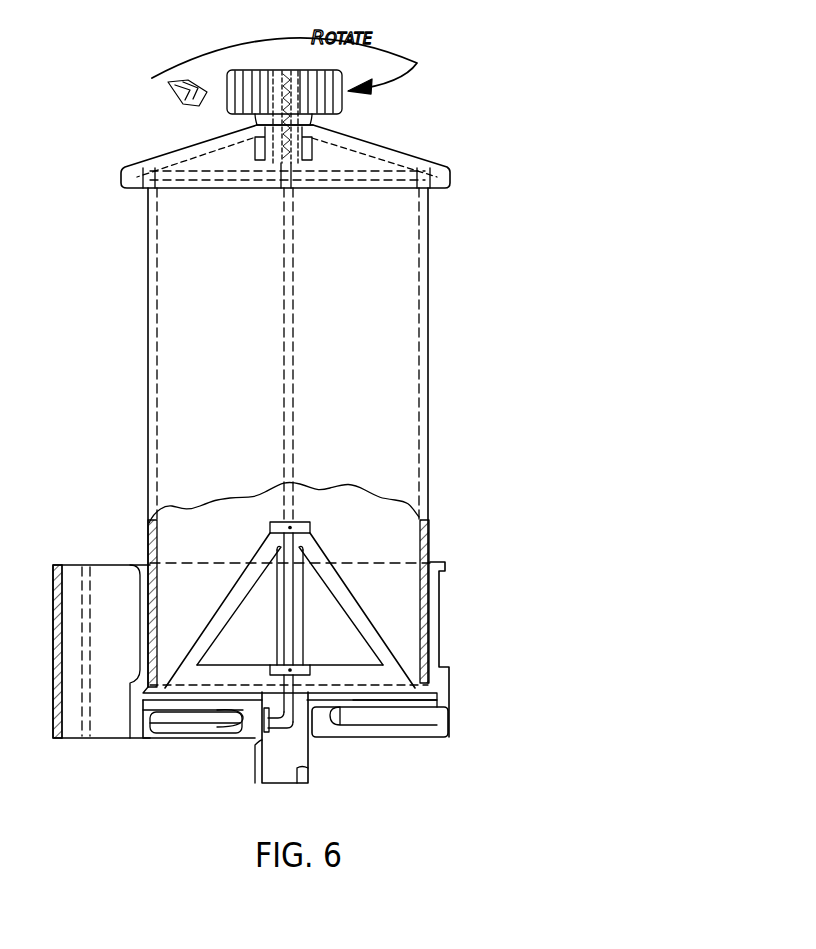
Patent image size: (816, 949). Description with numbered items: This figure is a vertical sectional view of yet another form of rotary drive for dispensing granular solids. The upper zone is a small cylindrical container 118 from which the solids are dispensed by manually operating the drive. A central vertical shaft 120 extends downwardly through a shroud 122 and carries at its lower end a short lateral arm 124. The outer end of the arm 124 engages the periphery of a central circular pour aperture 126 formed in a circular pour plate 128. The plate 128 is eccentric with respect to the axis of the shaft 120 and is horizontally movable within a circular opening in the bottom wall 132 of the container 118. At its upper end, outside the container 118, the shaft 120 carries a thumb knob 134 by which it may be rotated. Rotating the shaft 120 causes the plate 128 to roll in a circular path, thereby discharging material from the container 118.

The cylindrical container 118 is at (428, 412).
The central vertical shaft 120 is at (295, 507).
The shroud 122 is at (257, 546).
The short lateral arm 124 is at (275, 728).
The central circular pour aperture 126 is at (297, 770).
The circular pour plate 128 is at (227, 700).
The bottom wall 132 is at (418, 716).
The thumb knob 134 is at (342, 108).